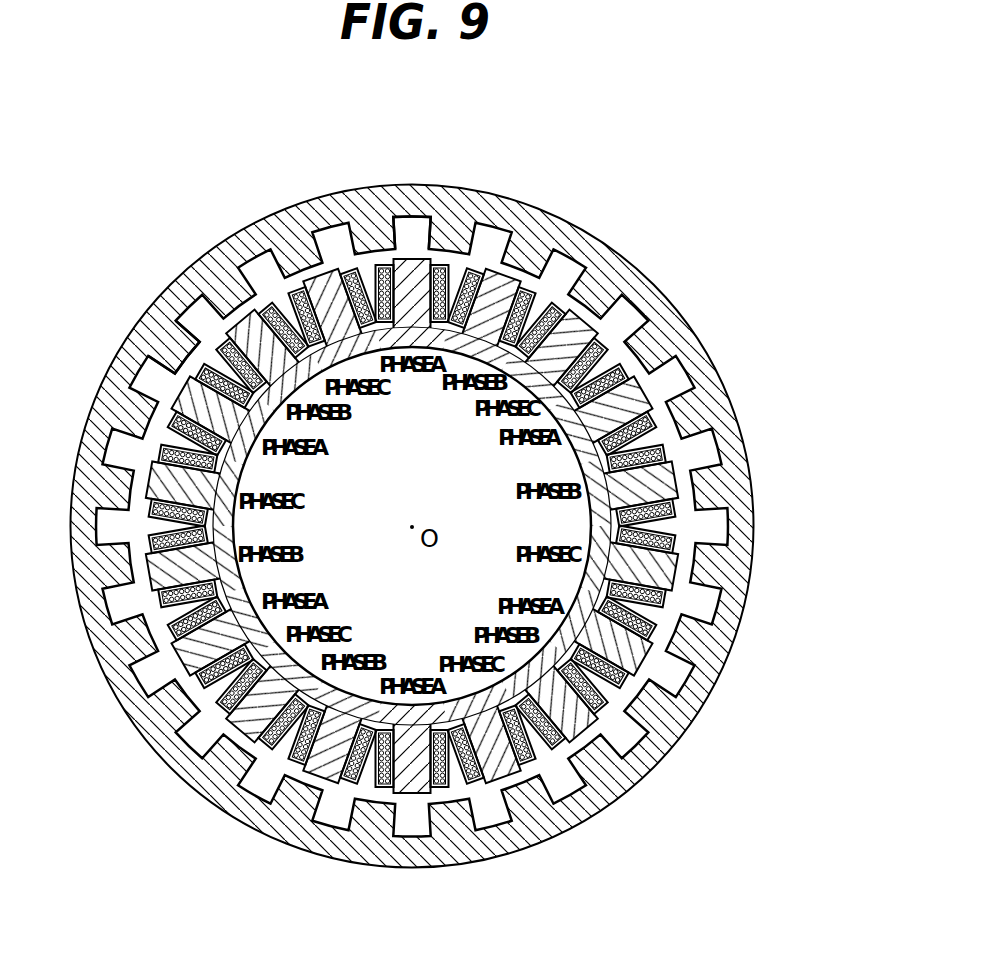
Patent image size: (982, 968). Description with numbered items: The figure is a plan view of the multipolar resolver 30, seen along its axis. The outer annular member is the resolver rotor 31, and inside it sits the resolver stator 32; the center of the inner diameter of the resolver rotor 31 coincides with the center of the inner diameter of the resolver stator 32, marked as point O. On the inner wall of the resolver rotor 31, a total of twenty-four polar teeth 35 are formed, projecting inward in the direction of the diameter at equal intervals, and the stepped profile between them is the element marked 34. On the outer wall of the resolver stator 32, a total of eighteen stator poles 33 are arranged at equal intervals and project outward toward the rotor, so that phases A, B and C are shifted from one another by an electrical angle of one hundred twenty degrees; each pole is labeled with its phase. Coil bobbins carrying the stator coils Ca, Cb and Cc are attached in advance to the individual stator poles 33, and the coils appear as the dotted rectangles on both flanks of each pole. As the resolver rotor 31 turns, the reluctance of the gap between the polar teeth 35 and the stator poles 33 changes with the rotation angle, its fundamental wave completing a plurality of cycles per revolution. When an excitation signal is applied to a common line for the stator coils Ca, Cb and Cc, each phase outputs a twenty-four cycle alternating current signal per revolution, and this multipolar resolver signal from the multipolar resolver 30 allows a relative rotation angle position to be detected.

The multipolar resolver 30 is at (538, 121).
The resolver rotor 31 is at (266, 212).
The resolver stator 32 is at (242, 458).
The stator pole 33 is at (240, 317).
The protrusion of outer core 34 is at (174, 349).
The polar tooth 35 is at (403, 232).
The stator coil (phase A) Ca is at (444, 265).
The stator coil (phase B) Cb is at (531, 292).
The stator coil (phase C) Cc is at (604, 347).